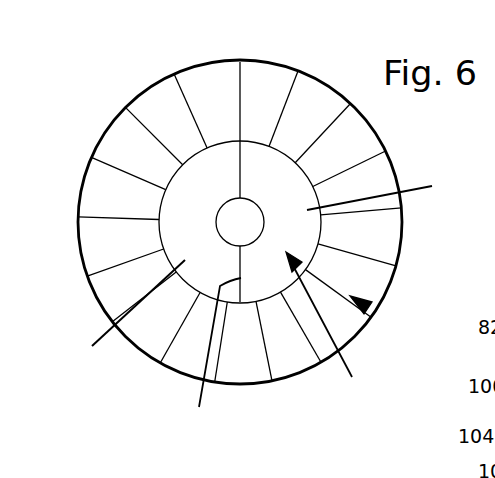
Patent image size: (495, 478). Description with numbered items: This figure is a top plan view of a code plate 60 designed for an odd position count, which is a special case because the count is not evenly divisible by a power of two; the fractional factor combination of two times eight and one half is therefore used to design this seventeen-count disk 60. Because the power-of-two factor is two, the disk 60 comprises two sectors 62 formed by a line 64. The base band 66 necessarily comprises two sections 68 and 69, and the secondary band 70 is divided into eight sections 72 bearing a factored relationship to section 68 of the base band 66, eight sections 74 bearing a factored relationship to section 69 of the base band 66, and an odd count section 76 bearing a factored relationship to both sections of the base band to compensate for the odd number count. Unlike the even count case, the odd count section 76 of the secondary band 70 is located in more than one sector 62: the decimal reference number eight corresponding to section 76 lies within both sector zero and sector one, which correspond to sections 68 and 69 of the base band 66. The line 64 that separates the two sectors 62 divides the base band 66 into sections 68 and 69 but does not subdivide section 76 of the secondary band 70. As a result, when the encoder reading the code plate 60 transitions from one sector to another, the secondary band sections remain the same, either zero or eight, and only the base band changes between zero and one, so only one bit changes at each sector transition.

The code plate 60 is at (308, 60).
The sector 62 is at (227, 67).
The line 64 is at (213, 355).
The base band 66 is at (341, 320).
The section 68 is at (123, 312).
The section 69 is at (384, 192).
The secondary band 70 is at (372, 310).
The sections 72 is at (207, 66).
The sections 74 is at (323, 85).
The odd count section 76 is at (243, 376).